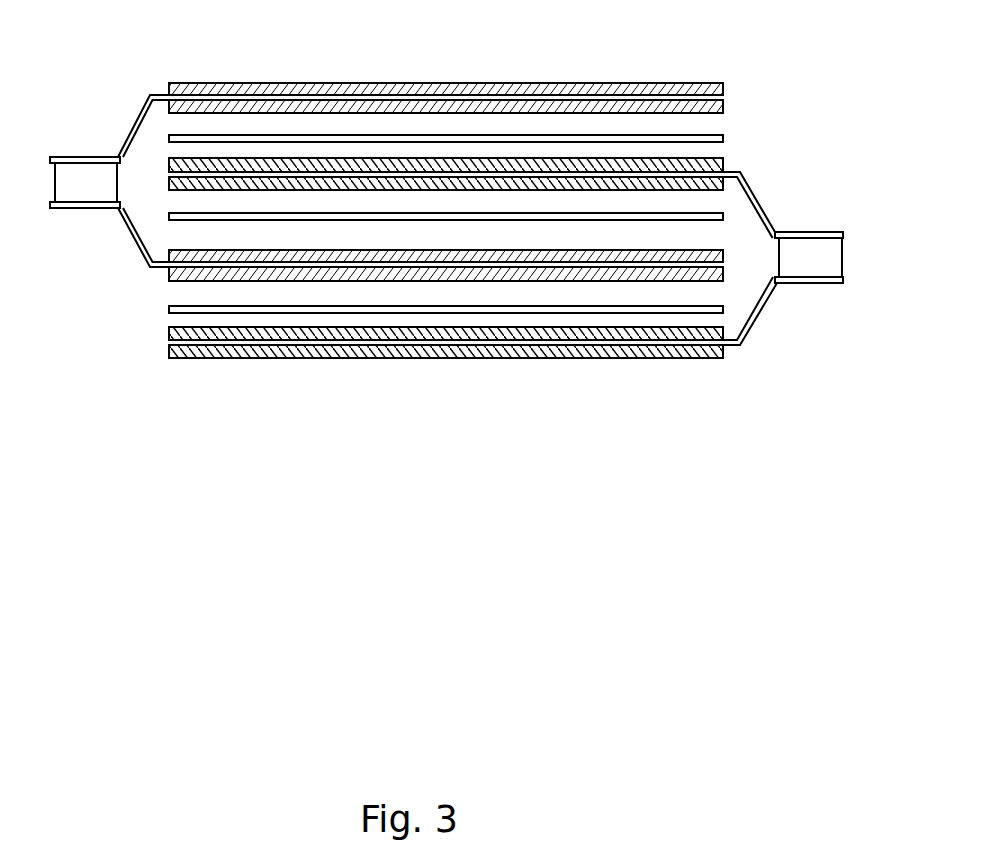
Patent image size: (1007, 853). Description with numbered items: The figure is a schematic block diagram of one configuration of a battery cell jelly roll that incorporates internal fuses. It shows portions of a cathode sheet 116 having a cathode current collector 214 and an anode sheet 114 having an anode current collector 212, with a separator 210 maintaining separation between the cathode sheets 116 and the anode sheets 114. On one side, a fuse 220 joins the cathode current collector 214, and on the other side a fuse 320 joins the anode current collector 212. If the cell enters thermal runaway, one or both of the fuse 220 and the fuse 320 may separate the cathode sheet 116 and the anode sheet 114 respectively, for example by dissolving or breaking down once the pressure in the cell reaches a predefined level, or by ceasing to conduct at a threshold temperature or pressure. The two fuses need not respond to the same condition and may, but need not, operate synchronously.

The anode sheet 114 is at (169, 348).
The cathode sheet 116 is at (723, 90).
The separator 210 is at (169, 308).
The anode current collector 212 is at (742, 168).
The cathode current collector 214 is at (100, 232).
The fuse 220 is at (78, 170).
The fuse 320 is at (818, 242).